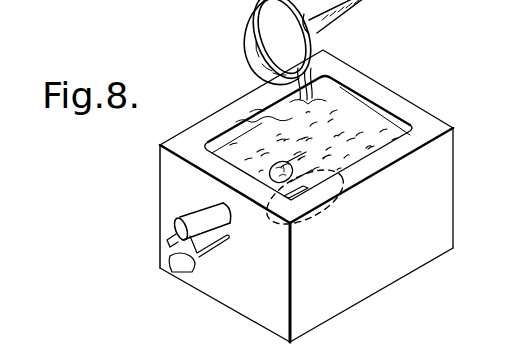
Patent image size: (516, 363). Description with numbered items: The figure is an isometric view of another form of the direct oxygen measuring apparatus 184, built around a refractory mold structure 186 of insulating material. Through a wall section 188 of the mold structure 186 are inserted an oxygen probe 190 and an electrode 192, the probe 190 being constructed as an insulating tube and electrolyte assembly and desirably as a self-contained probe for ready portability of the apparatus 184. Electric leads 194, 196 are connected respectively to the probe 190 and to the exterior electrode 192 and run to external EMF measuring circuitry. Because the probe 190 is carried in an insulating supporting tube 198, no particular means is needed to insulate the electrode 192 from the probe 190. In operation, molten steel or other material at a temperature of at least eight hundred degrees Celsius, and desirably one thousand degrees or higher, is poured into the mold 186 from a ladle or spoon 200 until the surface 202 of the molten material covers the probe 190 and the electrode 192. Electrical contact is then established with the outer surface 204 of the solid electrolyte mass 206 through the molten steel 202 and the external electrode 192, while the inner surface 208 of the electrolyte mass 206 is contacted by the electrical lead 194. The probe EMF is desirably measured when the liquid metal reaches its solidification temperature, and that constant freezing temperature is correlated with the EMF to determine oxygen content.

The direct oxygen measuring apparatus 184 is at (403, 100).
The refractory mold structure 186 is at (401, 271).
The wall section 188 is at (182, 185).
The oxygen probe 190 is at (191, 220).
The electrode 192 is at (226, 243).
The electric lead 194 is at (169, 249).
The electric lead 196 is at (176, 269).
The insulating supporting tube 198 is at (229, 214).
The ladle 200 is at (251, 45).
The surface of the molten material 202 is at (353, 101).
The outer surface 204 is at (306, 167).
The solid electrolyte mass 206 is at (345, 210).
The inner surface 208 is at (304, 228).